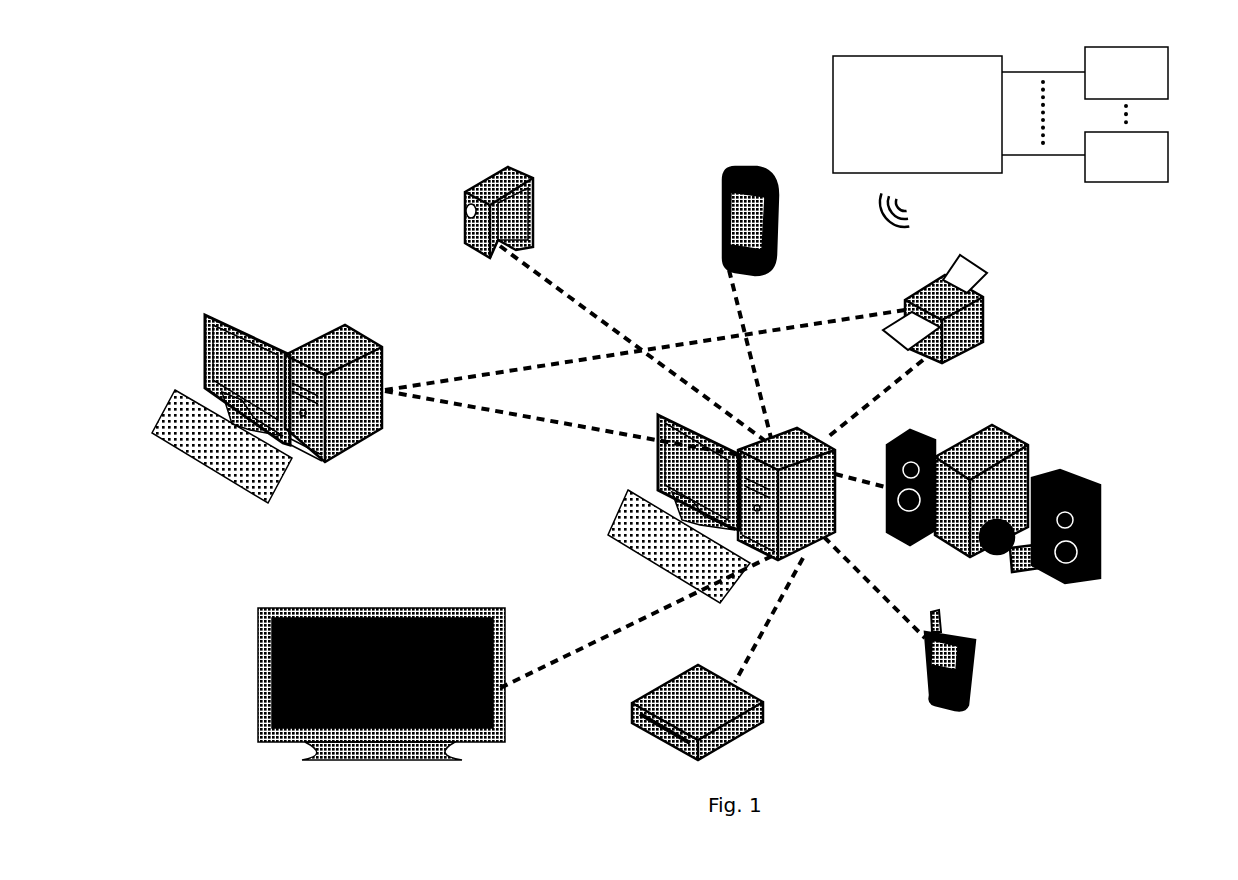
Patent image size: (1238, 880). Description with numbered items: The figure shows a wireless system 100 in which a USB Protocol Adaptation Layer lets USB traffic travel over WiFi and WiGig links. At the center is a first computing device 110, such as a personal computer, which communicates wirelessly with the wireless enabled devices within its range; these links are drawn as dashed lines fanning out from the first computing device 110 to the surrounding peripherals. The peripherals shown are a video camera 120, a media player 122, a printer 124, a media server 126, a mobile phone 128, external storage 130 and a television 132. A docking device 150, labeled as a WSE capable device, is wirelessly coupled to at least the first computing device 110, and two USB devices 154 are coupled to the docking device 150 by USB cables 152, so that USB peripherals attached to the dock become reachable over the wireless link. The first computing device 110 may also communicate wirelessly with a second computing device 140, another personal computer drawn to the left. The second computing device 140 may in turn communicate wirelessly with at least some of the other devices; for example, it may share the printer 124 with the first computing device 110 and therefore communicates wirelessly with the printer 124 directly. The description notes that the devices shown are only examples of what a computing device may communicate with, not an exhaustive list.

The wireless system 100 is at (268, 140).
The first computing device 110 is at (657, 455).
The video camera 120 is at (532, 183).
The media player 122 is at (778, 222).
The printer 124 is at (985, 307).
The media server 126 is at (970, 560).
The mobile phone 128 is at (980, 672).
The external storage 130 is at (765, 702).
The television 132 is at (260, 643).
The second computing device 140 is at (348, 452).
The docking device 150 is at (900, 56).
The USB cables 152 is at (1052, 48).
The USB devices 154 is at (1128, 200).